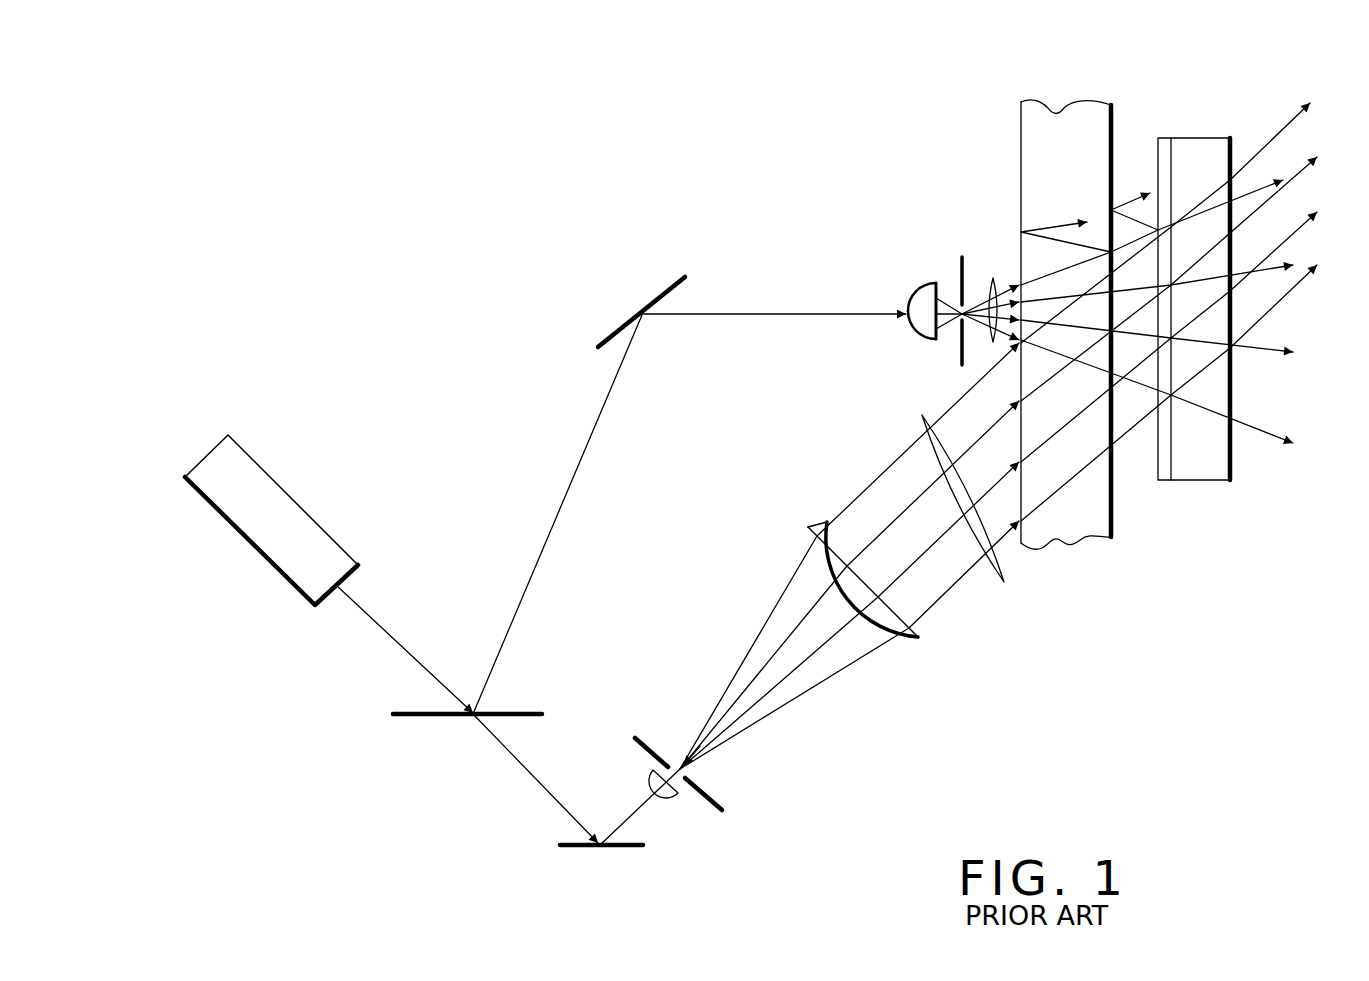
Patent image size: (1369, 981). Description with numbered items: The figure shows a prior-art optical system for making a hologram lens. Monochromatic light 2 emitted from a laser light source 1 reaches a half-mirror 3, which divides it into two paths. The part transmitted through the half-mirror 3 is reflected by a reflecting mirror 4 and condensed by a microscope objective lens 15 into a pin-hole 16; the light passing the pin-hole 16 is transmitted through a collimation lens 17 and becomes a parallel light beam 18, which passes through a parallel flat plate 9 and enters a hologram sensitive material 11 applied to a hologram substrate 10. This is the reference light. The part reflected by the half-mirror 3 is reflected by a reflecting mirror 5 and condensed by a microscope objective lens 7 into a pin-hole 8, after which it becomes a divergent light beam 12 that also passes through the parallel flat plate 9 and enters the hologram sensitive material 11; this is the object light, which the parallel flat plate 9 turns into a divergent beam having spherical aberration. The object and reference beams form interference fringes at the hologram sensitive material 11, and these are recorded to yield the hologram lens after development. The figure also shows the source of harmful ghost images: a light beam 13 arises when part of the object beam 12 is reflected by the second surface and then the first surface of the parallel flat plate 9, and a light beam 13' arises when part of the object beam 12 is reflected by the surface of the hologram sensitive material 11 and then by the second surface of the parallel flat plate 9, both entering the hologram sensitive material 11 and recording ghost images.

The laser light source 1 is at (296, 499).
The monochromatic light 2 is at (420, 660).
The half-mirror 3 is at (413, 718).
The reflecting mirror 4 is at (630, 847).
The reflecting mirror 5 is at (673, 282).
The microscope objective lens 7 is at (918, 290).
The pin-hole 8 is at (970, 293).
The parallel flat plate 9 is at (1050, 112).
The hologram substrate 10 is at (1202, 137).
The hologram sensitive material 11 is at (1153, 145).
The divergent light beam 12 is at (993, 277).
The light beam 13 is at (1066, 197).
The light beam 13' is at (1120, 142).
The microscope objective lens 15 is at (673, 793).
The pin-hole 16 is at (702, 777).
The collimation lens 17 is at (917, 640).
The parallel light beam 18 is at (1003, 583).